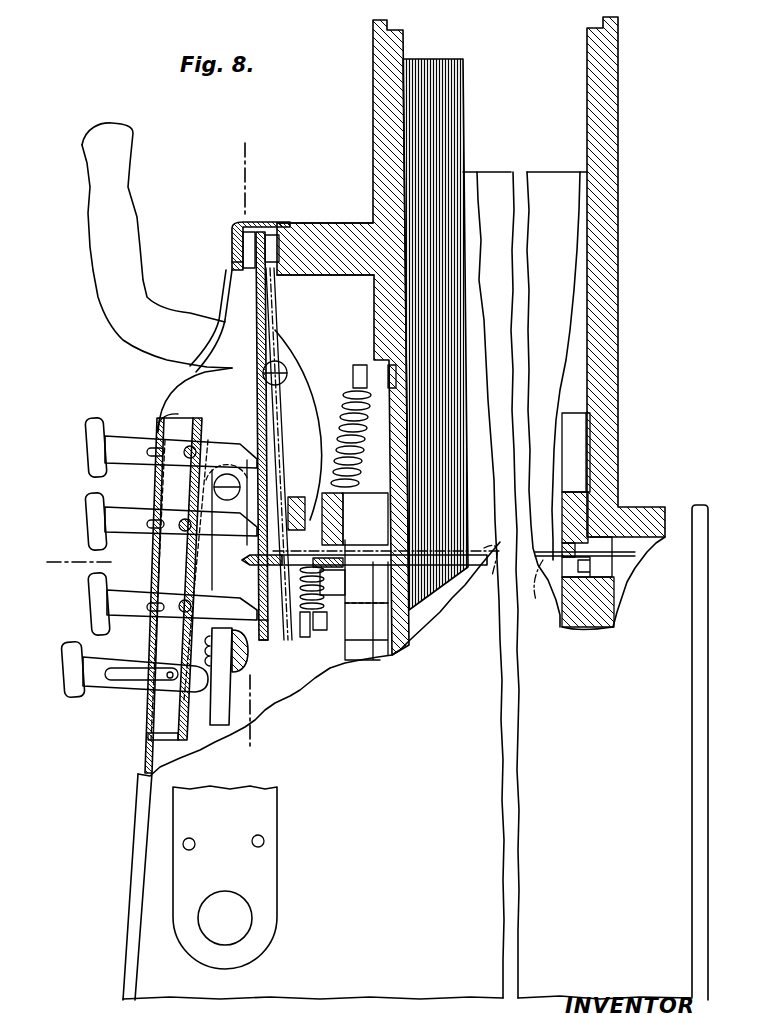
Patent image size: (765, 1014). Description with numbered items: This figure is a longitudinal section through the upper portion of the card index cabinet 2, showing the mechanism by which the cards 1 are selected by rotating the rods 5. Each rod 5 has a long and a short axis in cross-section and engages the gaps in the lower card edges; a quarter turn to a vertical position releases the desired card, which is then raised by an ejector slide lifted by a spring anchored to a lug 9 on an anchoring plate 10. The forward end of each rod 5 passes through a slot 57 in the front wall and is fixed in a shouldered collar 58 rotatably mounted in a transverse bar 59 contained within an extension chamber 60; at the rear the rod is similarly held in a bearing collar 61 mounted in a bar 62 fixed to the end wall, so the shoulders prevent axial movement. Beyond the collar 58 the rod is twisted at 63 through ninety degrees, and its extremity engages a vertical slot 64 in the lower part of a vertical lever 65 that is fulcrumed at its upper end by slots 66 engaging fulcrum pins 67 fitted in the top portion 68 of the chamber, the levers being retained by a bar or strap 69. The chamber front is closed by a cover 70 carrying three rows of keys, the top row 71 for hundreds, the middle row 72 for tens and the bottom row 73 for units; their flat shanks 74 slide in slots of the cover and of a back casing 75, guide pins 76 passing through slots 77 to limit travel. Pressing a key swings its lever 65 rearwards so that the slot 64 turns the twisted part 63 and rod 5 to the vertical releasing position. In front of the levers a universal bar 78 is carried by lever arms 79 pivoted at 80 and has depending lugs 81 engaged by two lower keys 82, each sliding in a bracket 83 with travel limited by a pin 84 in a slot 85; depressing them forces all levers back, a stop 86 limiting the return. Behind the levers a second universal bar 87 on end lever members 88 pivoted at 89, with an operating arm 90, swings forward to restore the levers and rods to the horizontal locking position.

The cards 1 is at (438, 72).
The cabinet 2 is at (603, 88).
The rotatable rods 5 is at (555, 555).
The lug 9 is at (261, 454).
The anchoring plate 10 is at (70, 549).
The slot 57 is at (400, 567).
The shouldered collars 58 is at (340, 598).
The transverse bar 59 is at (333, 515).
The extension chamber 60 is at (323, 285).
The bearing collars 61 is at (615, 607).
The bar 62 is at (575, 490).
The twisted part 63 is at (243, 560).
The vertical slot 64 is at (273, 627).
The vertical lever 65 is at (225, 360).
The slots 66 is at (227, 260).
The fulcrum pins 67 is at (237, 228).
The top portion 68 is at (355, 225).
The bar or strap 69 is at (228, 270).
The cover 70 is at (175, 388).
The top row of keys 71 is at (93, 438).
The middle row of keys 72 is at (90, 513).
The bottom row of keys 73 is at (93, 600).
The key shanks 74 is at (120, 440).
The back casing 75 is at (178, 413).
The guide pins 76 is at (188, 460).
The slots 77 is at (160, 452).
The universal bar 78 is at (265, 660).
The lever arms 79 is at (283, 472).
The pivot 80 is at (228, 472).
The depending lugs 81 is at (220, 705).
The keys 82 is at (68, 668).
The casing or bracket 83 is at (140, 750).
The pin 84 is at (167, 683).
The slot 85 is at (115, 675).
The stop 86 is at (195, 575).
The second universal bar 87 is at (345, 408).
The end lever members 88 is at (290, 378).
The pivot 89 is at (277, 360).
The operating arm 90 is at (98, 242).